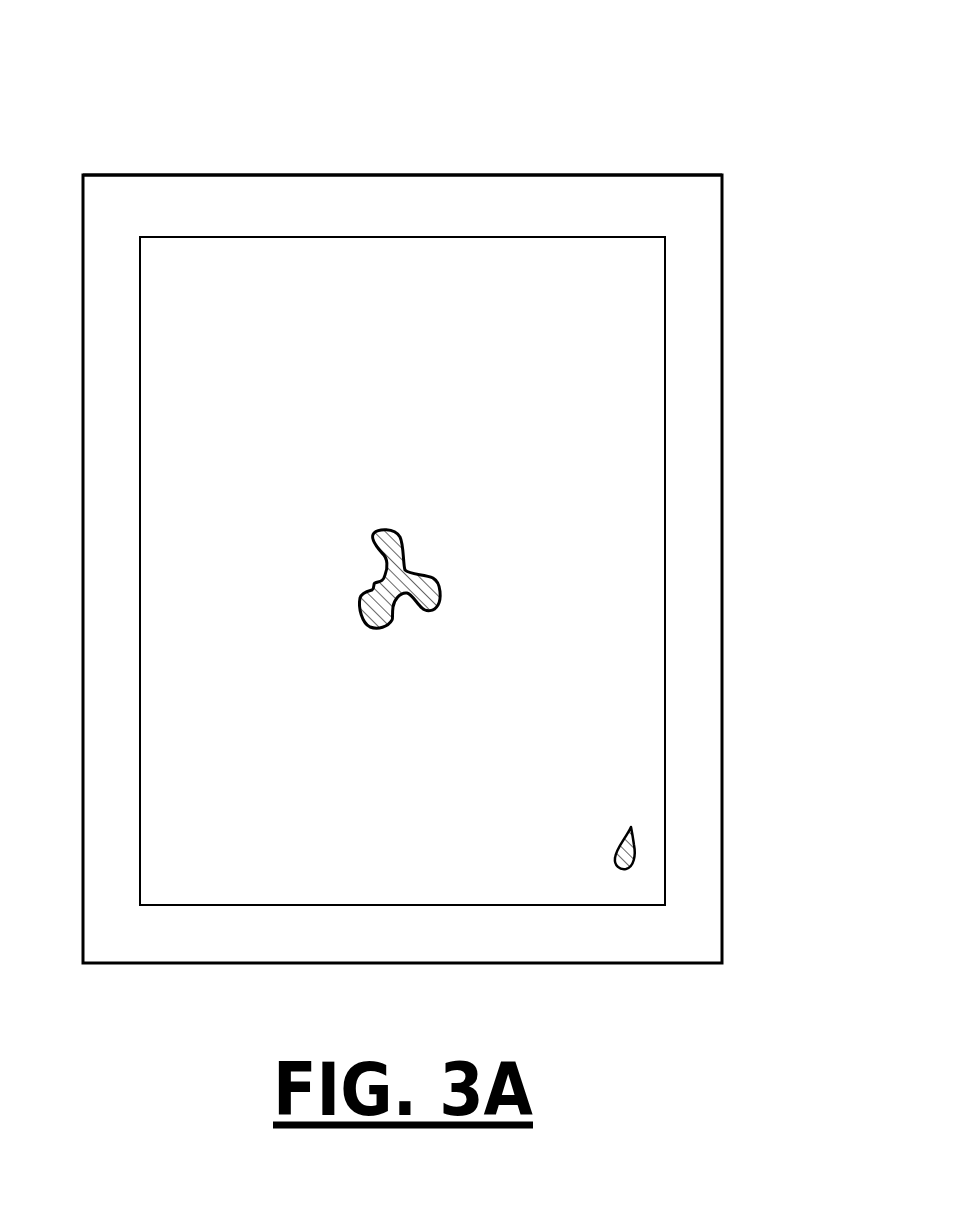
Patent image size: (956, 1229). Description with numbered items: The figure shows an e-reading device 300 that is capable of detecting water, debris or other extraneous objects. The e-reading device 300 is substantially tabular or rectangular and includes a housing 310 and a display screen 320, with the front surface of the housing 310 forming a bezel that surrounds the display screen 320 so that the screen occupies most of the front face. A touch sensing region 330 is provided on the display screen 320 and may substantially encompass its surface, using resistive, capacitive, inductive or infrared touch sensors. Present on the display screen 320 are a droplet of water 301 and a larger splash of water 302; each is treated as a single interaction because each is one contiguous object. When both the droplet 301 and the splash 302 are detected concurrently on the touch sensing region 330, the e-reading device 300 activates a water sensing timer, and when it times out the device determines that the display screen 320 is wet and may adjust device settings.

The e-reading device 300 is at (638, 73).
The housing 310 is at (403, 173).
The display screen 320 is at (668, 493).
The touch sensing region 330 is at (224, 276).
The splash of water 302 is at (377, 532).
The droplet of water 301 is at (618, 831).